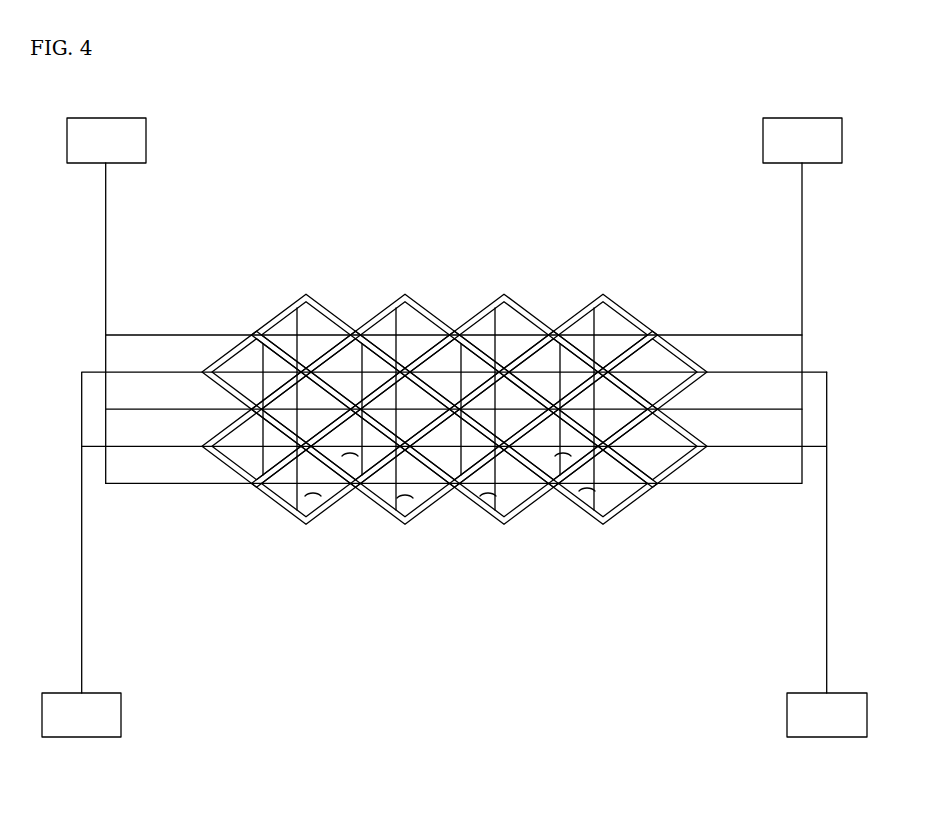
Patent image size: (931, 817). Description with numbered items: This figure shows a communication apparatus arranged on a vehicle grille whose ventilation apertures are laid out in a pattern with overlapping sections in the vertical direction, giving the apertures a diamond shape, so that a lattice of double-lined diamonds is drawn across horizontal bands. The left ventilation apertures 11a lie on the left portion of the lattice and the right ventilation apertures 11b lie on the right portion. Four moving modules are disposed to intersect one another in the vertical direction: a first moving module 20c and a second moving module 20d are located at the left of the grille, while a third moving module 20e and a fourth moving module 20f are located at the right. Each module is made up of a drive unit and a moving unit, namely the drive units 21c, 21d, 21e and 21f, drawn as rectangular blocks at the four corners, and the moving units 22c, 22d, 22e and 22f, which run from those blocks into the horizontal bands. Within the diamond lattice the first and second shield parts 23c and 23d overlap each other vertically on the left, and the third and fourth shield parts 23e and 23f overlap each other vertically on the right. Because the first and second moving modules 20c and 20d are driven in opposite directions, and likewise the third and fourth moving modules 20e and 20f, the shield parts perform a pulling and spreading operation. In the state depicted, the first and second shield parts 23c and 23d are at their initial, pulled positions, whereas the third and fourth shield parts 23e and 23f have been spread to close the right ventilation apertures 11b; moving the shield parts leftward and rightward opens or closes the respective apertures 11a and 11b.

The left ventilation apertures 11a is at (350, 456).
The right ventilation apertures 11b is at (563, 456).
The first moving module 20c is at (375, 210).
The second moving module 20d is at (278, 615).
The third moving module 20e is at (620, 132).
The fourth moving module 20f is at (755, 643).
The drive unit 21c is at (137, 143).
The drive unit 21d is at (112, 697).
The drive unit 21e is at (772, 142).
The drive unit 21f is at (797, 697).
The moving unit 22c is at (185, 335).
The moving unit 22d is at (177, 446).
The moving unit 22e is at (710, 335).
The moving unit 22f is at (730, 446).
The first shield part 23c is at (297, 325).
The second shield part 23d is at (288, 495).
The third shield part 23e is at (600, 325).
The fourth shield part 23f is at (623, 490).